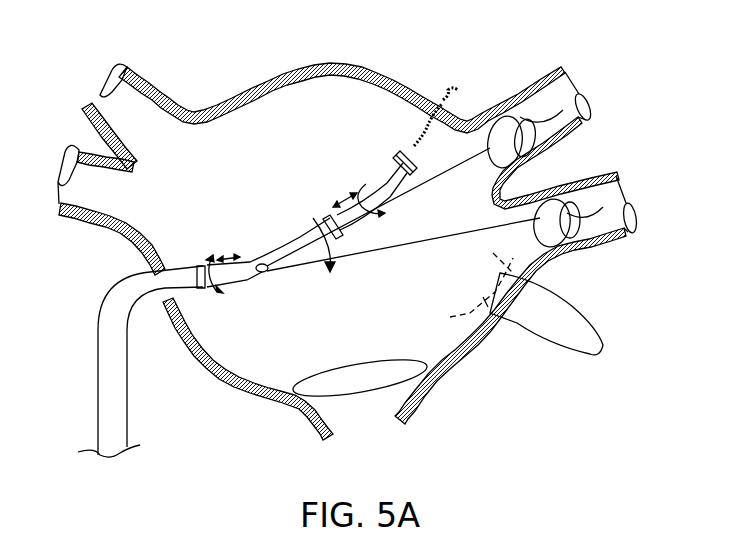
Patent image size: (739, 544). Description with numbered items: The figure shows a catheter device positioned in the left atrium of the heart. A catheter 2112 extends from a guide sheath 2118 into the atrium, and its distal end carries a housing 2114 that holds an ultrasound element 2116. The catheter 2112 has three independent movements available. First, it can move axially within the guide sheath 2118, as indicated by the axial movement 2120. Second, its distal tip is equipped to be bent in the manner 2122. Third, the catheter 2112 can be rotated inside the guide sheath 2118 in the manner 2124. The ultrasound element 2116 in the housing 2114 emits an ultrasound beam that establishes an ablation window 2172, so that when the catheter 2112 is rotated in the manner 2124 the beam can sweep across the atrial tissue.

The catheter 2112 is at (293, 247).
The housing 2114 is at (398, 156).
The ultrasound element 2116 is at (403, 152).
The guide sheath 2118 is at (110, 352).
The axial movement 2120 is at (254, 251).
The bending manner 2122 is at (313, 218).
The rotation manner 2124 is at (253, 318).
The ablation window 2172 is at (450, 92).